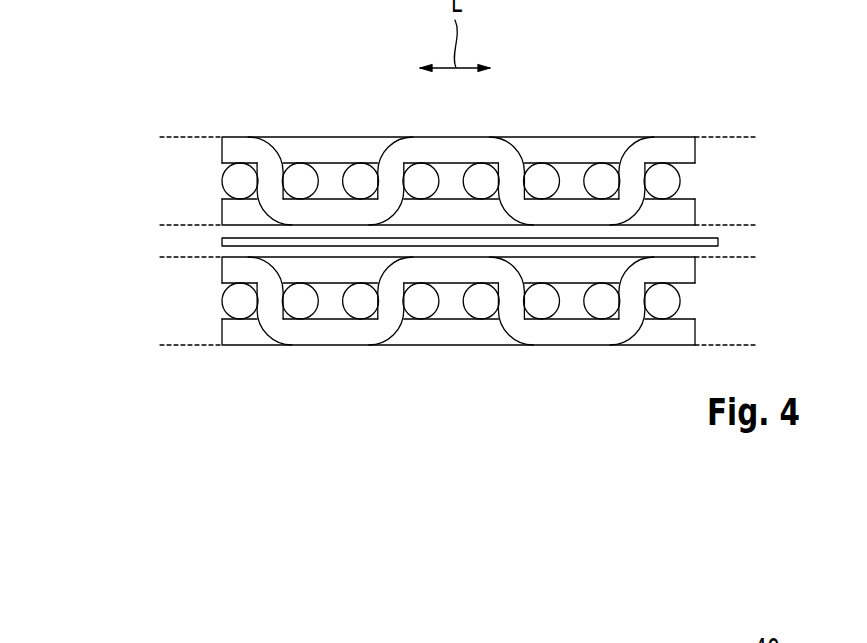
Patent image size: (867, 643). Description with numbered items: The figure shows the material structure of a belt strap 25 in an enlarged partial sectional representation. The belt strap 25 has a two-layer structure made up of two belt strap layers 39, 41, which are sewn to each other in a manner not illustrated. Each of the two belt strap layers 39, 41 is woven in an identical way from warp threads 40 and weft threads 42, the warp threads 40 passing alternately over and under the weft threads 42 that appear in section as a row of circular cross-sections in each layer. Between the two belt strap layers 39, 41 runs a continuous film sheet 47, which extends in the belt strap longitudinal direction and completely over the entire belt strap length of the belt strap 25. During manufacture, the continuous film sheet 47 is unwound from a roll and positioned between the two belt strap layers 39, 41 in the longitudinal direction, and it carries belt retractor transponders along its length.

The belt strap 25 is at (83, 137).
The belt strap layer 39 is at (157, 137).
The belt strap layer 41 is at (157, 258).
The continuous film sheet 47 is at (193, 243).
The warp threads 40 is at (238, 148).
The weft threads 42 is at (299, 177).